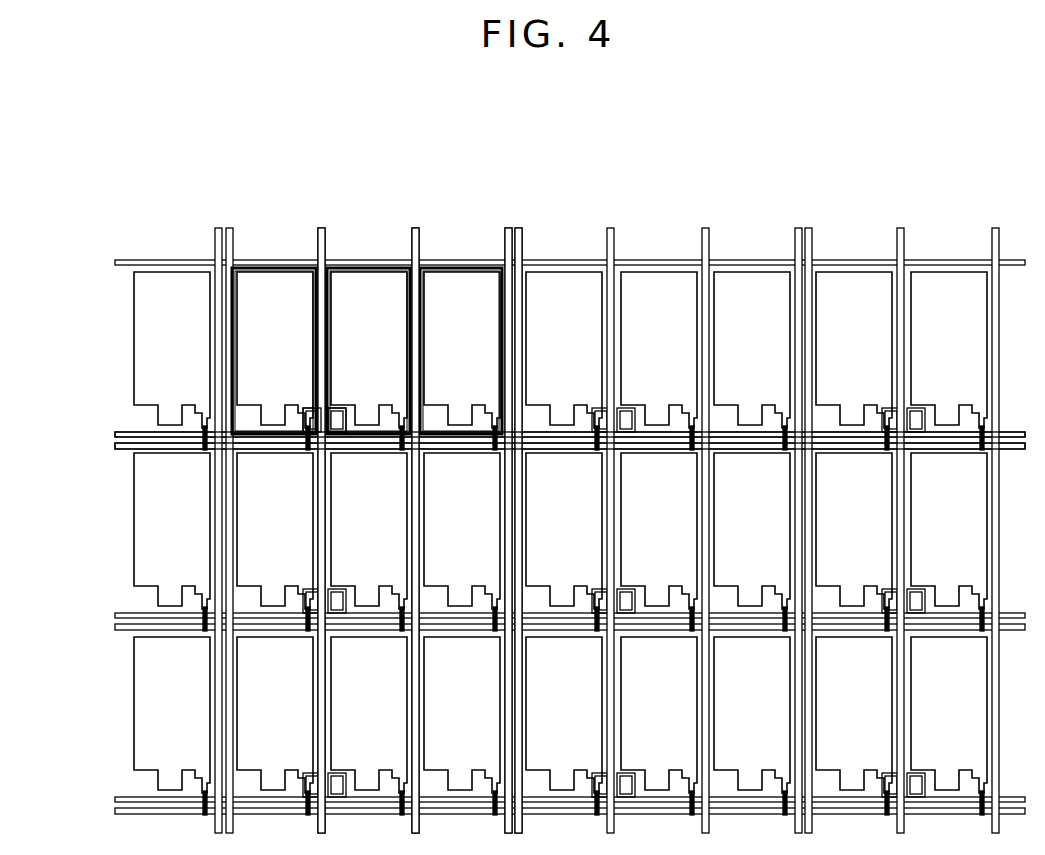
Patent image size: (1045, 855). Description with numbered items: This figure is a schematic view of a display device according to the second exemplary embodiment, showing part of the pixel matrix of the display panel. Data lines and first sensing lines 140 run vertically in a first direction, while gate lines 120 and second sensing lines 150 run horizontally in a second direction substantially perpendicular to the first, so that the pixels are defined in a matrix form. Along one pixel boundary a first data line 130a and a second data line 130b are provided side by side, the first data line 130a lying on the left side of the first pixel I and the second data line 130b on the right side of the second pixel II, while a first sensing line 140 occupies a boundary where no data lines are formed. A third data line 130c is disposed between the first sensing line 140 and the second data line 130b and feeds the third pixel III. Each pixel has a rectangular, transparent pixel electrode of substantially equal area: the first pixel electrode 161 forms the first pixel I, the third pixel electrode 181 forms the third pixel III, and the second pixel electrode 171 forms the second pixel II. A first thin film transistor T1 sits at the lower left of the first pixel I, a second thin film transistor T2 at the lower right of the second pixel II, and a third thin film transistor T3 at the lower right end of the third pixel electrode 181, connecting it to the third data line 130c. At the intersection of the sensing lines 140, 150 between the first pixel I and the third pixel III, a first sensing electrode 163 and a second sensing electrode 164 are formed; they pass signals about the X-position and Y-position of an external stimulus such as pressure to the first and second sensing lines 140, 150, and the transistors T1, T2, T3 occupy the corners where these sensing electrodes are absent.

The first pixel electrode 161 is at (240, 336).
The third pixel electrode 181 is at (333, 336).
The second pixel electrode 171 is at (425, 336).
The first sensing line 140 is at (319, 268).
The first data line 130a is at (520, 230).
The second data line 130b is at (507, 230).
The third data line 130c is at (409, 268).
The second sensing line 150 is at (115, 434).
The gate line 120 is at (115, 446).
The first thin film transistor T1 is at (240, 438).
The second thin film transistor T2 is at (492, 437).
The third thin film transistor T3 is at (400, 437).
The first sensing electrode 163 is at (308, 437).
The second sensing electrode 164 is at (347, 437).
The first pixel I is at (270, 268).
The second pixel II is at (450, 268).
The third pixel III is at (362, 268).